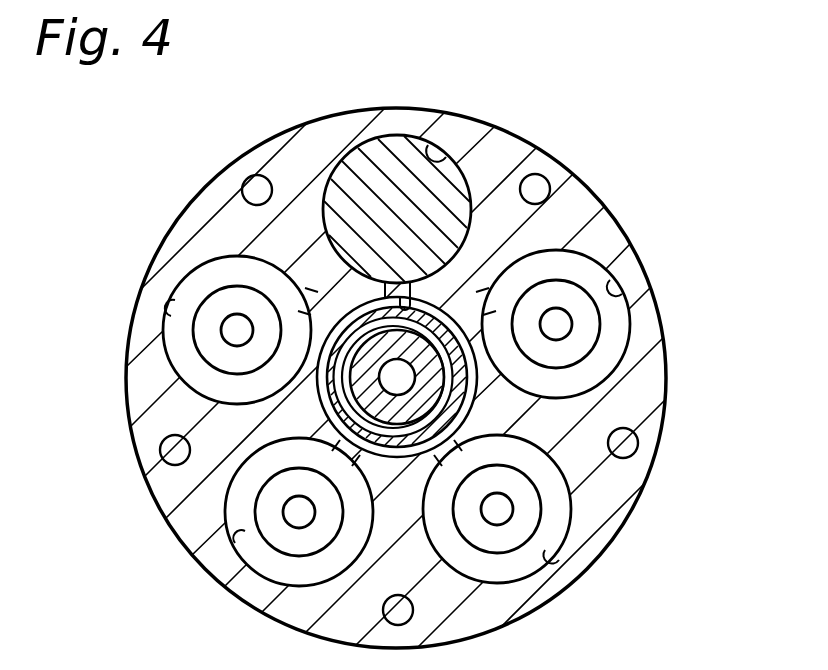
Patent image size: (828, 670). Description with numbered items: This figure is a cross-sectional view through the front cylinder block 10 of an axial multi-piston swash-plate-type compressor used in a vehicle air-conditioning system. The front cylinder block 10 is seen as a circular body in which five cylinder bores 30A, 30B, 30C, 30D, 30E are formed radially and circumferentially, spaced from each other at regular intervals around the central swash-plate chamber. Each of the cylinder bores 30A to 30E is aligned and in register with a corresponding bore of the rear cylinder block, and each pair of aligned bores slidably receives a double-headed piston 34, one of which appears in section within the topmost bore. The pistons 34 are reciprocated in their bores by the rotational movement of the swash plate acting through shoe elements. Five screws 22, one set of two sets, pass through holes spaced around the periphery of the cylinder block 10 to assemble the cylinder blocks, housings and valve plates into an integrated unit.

The front cylinder block 10 is at (337, 106).
The screws 22 is at (252, 178).
The cylinder bore 30A is at (443, 153).
The cylinder bore 30B is at (620, 292).
The cylinder bore 30C is at (547, 557).
The cylinder bore 30D is at (247, 540).
The cylinder bore 30E is at (167, 317).
The double-headed piston 34 is at (457, 178).